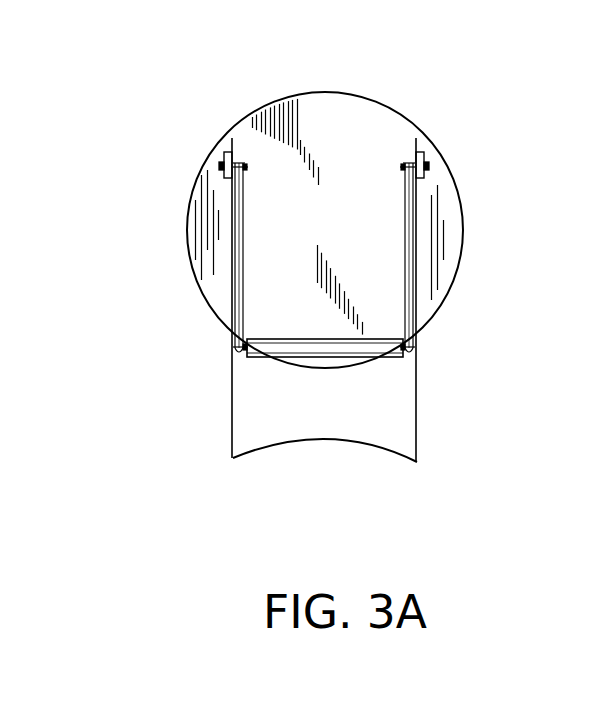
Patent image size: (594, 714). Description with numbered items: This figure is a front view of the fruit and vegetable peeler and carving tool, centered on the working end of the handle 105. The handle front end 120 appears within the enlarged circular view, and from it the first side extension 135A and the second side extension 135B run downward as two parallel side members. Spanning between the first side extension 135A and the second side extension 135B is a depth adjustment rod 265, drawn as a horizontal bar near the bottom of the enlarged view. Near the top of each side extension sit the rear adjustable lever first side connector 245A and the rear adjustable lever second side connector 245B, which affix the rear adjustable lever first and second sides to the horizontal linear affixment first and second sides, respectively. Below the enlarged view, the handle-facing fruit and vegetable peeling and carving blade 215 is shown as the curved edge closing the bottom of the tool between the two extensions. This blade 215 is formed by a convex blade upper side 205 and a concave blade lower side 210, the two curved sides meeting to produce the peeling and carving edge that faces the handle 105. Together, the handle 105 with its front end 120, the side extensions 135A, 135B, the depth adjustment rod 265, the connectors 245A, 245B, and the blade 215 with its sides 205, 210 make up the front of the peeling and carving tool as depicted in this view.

The handle 105 is at (320, 66).
The handle front end 120 is at (320, 217).
The first side extension 135A is at (438, 388).
The second side extension 135B is at (210, 381).
The convex blade upper side 205 is at (278, 425).
The concave blade lower side 210 is at (298, 462).
The handle-facing fruit and vegetable peeling and carving blade 215 is at (436, 474).
The rear adjustable lever first side connector 245A is at (450, 170).
The rear adjustable lever second side connector 245B is at (190, 170).
The depth adjustment rod 265 is at (322, 330).